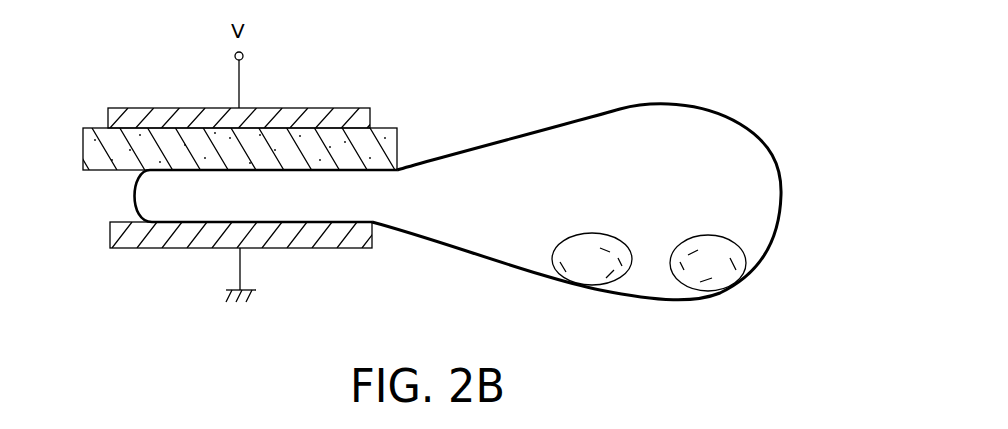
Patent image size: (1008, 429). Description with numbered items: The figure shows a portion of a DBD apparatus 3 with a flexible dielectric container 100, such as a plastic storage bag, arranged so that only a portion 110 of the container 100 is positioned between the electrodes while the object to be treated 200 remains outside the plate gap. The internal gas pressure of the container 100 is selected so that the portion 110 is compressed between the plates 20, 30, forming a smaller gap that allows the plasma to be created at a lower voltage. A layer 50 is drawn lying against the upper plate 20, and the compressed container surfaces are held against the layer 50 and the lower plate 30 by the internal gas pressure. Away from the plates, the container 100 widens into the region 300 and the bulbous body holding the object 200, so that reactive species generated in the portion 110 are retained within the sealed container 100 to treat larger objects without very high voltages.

The DBD apparatus 3 is at (616, 44).
The plate 20 is at (289, 108).
The electrode plate 30 is at (128, 248).
The dielectric layer 50 is at (108, 208).
The dielectric container 100 is at (755, 272).
The portion of the container 110 is at (337, 200).
The object to be treated 200 is at (590, 234).
The neck region 300 is at (457, 185).